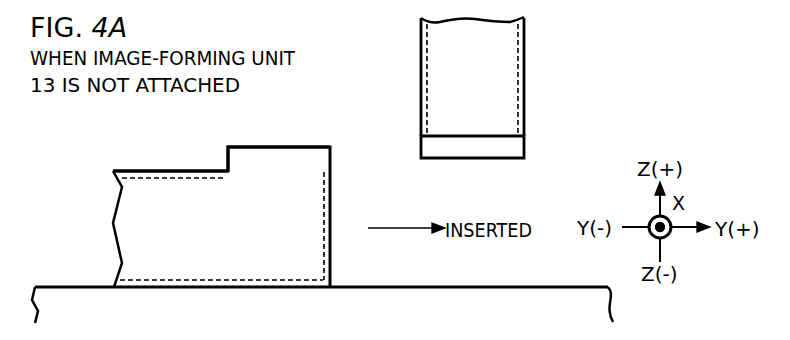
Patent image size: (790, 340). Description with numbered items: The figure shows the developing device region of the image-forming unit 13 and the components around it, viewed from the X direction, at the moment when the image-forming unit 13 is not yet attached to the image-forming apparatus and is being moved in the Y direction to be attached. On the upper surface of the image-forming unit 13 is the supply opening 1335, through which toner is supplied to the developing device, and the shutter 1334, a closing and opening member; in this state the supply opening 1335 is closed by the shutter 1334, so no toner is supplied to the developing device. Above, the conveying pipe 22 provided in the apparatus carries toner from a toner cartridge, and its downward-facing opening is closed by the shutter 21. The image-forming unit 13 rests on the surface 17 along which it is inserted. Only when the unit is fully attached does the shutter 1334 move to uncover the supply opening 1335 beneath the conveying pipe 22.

The image-forming unit 13 is at (277, 290).
The guide rail / mounting surface 17 is at (400, 322).
The shutter 21 is at (513, 150).
The conveying pipe 22 is at (513, 67).
The shutter 1334 is at (244, 156).
The supply opening 1335 is at (228, 178).